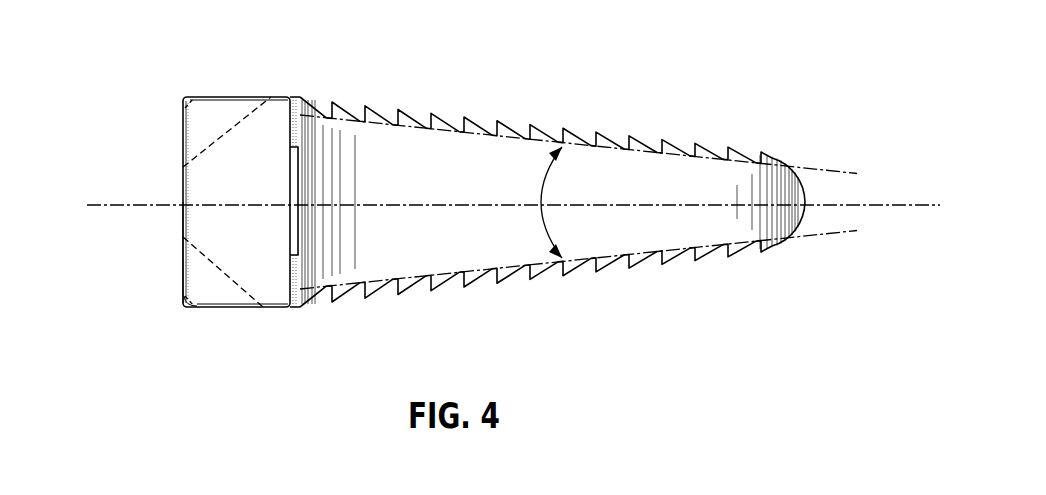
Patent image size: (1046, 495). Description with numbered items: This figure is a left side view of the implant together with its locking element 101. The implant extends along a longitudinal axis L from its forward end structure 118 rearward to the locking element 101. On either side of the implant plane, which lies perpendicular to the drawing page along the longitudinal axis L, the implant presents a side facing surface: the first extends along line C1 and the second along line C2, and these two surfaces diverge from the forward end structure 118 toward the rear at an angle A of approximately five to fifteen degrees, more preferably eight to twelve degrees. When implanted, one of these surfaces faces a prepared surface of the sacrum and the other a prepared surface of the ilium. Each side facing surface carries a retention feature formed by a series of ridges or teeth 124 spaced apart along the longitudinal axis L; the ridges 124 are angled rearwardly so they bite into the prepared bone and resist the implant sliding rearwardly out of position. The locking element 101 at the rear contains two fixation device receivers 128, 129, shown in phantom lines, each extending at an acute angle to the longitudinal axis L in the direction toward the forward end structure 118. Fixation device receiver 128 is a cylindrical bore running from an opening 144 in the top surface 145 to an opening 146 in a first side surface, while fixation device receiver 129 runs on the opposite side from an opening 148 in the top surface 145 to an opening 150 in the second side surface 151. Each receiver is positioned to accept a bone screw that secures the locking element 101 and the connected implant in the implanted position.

The locking element 101 is at (505, 206).
The forward end structure 118 is at (814, 199).
The ridges or teeth 124 is at (465, 116).
The fixation device receiver 128 is at (200, 127).
The fixation device receiver 129 is at (197, 274).
The opening 144 is at (183, 167).
The top surface 145 is at (183, 198).
The opening 146 is at (265, 97).
The opening 148 is at (183, 237).
The opening 150 is at (261, 308).
The second side surface 151 is at (205, 308).
The longitudinal axis L is at (504, 208).
The angle A is at (540, 202).
The line C1 is at (817, 168).
The line C2 is at (817, 235).